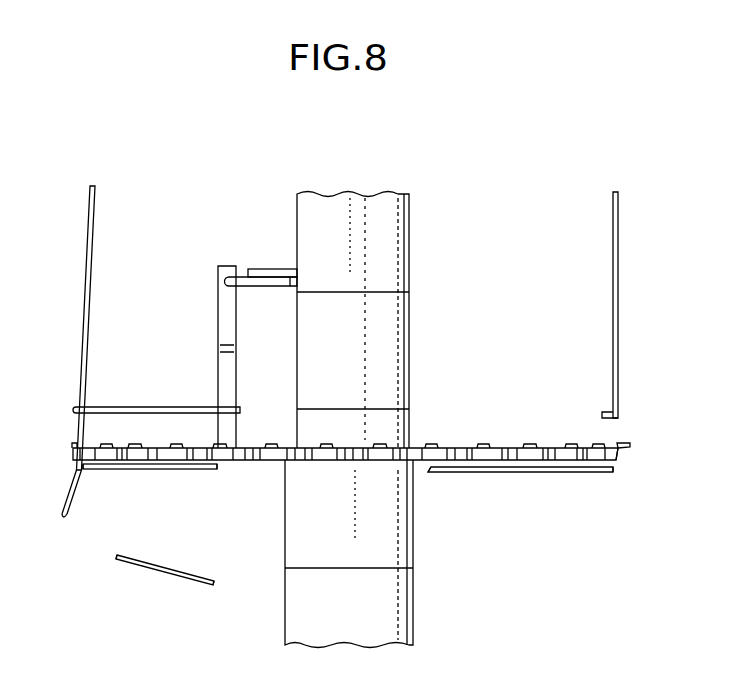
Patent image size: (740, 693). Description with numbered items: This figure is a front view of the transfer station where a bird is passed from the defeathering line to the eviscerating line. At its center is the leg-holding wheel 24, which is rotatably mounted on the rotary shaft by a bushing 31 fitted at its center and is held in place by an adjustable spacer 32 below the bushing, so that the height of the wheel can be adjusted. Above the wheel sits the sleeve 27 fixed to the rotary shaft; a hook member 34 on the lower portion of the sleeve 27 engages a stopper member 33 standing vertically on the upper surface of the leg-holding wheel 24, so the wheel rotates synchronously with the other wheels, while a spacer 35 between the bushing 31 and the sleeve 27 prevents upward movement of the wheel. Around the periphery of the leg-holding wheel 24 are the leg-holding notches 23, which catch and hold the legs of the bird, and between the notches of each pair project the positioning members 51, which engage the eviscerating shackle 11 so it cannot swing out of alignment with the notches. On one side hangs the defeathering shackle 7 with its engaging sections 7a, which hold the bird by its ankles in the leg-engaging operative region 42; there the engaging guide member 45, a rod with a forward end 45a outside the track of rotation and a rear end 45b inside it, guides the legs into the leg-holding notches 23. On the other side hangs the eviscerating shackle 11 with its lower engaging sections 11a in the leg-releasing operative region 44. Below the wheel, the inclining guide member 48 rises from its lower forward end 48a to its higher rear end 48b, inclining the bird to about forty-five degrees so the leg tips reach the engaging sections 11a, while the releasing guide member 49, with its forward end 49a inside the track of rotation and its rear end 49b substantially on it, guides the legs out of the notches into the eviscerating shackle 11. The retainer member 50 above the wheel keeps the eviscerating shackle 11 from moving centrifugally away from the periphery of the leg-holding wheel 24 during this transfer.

The defeathering shackle 7 is at (613, 249).
The engaging sections 7a is at (604, 413).
The eviscerating shackle 11 is at (92, 212).
The engaging sections 11a is at (64, 520).
The leg-holding notches 23 is at (188, 462).
The leg-holding wheel 24 is at (453, 448).
The sleeve 27 is at (409, 256).
The bushing 31 is at (409, 418).
The adjustable spacer 32 is at (409, 619).
The stopper member 33 is at (218, 350).
The hook member 34 is at (272, 268).
The spacer 35 is at (409, 356).
The leg-engaging operative region 42 is at (610, 436).
The leg-releasing operative region 44 is at (70, 464).
The engaging guide member 45 is at (548, 473).
The forward end 45a is at (429, 473).
The rear end 45b is at (612, 473).
The inclining guide member 48 is at (181, 568).
The forward end 48a is at (213, 586).
The rear end 48b is at (116, 558).
The releasing guide member 49 is at (135, 470).
The forward end 49a is at (211, 470).
The rear end 49b is at (88, 470).
The retainer member 50 is at (151, 407).
The positioning members 51 is at (72, 445).